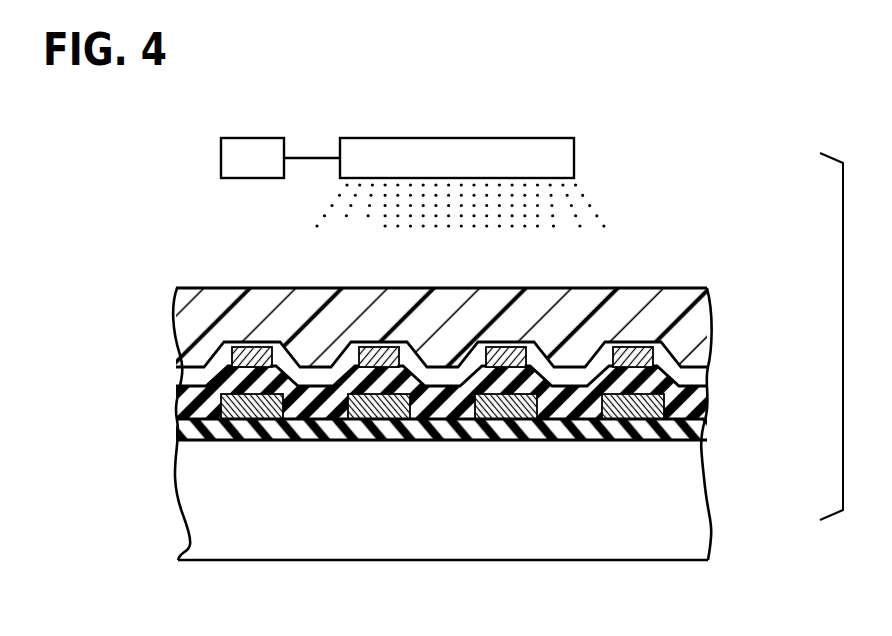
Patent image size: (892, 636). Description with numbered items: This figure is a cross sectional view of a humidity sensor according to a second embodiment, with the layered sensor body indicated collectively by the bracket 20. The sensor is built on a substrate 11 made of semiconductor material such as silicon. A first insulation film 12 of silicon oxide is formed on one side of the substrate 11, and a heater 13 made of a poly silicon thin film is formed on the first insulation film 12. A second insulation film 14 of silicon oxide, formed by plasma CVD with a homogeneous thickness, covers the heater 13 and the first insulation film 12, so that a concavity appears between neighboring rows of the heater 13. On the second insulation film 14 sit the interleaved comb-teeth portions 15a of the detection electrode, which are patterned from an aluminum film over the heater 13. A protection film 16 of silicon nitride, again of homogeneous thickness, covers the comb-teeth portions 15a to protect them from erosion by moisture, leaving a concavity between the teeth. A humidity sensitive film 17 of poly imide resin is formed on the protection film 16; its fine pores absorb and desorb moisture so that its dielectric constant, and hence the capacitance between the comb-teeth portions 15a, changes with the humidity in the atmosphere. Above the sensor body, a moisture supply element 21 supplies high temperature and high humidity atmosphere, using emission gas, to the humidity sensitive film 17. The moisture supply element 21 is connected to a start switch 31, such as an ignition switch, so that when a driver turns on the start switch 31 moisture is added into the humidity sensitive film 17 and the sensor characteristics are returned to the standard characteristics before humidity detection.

The substrate 11 is at (697, 508).
The first insulation film 12 is at (702, 426).
The heater 13 is at (503, 412).
The second insulation film 14 is at (700, 403).
The comb-teeth portion 15a is at (633, 352).
The protection film 16 is at (697, 375).
The humidity sensitive film 17 is at (245, 307).
The light sensing element 20 is at (697, 240).
The moisture supply element 21 is at (457, 138).
The start switch 31 is at (221, 158).